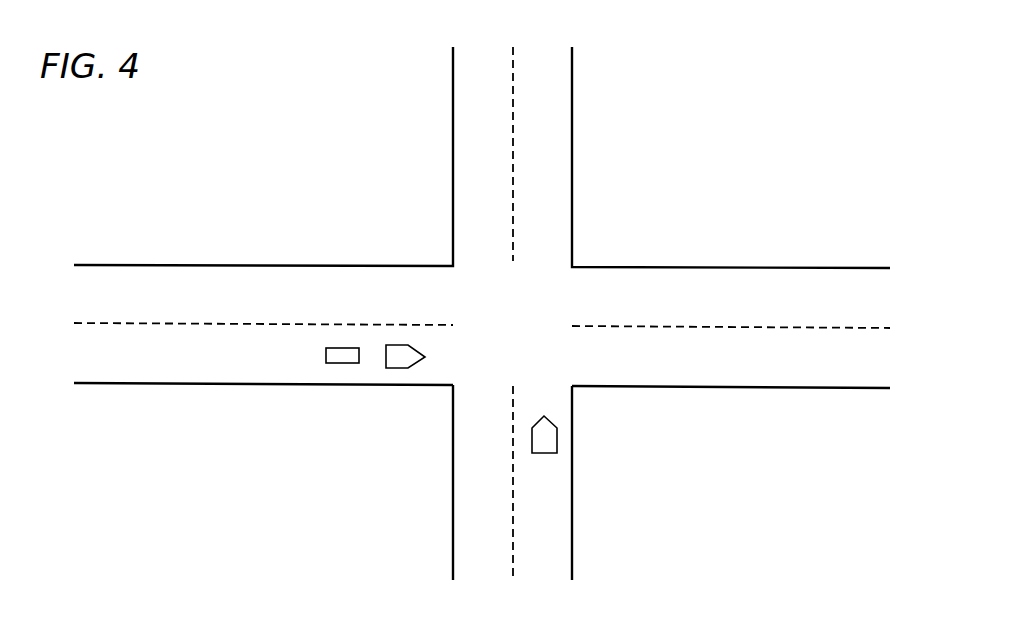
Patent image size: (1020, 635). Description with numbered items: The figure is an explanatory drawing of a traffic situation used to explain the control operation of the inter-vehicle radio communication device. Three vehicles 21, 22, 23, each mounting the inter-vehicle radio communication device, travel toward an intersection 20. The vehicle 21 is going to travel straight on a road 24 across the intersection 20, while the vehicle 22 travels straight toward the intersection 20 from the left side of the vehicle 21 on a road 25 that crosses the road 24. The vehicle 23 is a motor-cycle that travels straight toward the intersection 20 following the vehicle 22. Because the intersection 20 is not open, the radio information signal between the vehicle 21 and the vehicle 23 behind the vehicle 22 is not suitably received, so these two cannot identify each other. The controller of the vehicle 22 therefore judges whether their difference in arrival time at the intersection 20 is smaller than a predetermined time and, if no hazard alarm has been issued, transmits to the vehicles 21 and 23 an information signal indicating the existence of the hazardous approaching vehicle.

The intersection 20 is at (545, 283).
The vehicle 21 is at (543, 453).
The vehicle 22 is at (395, 368).
The vehicle 23 is at (333, 364).
The road 24 is at (563, 554).
The road 25 is at (181, 368).